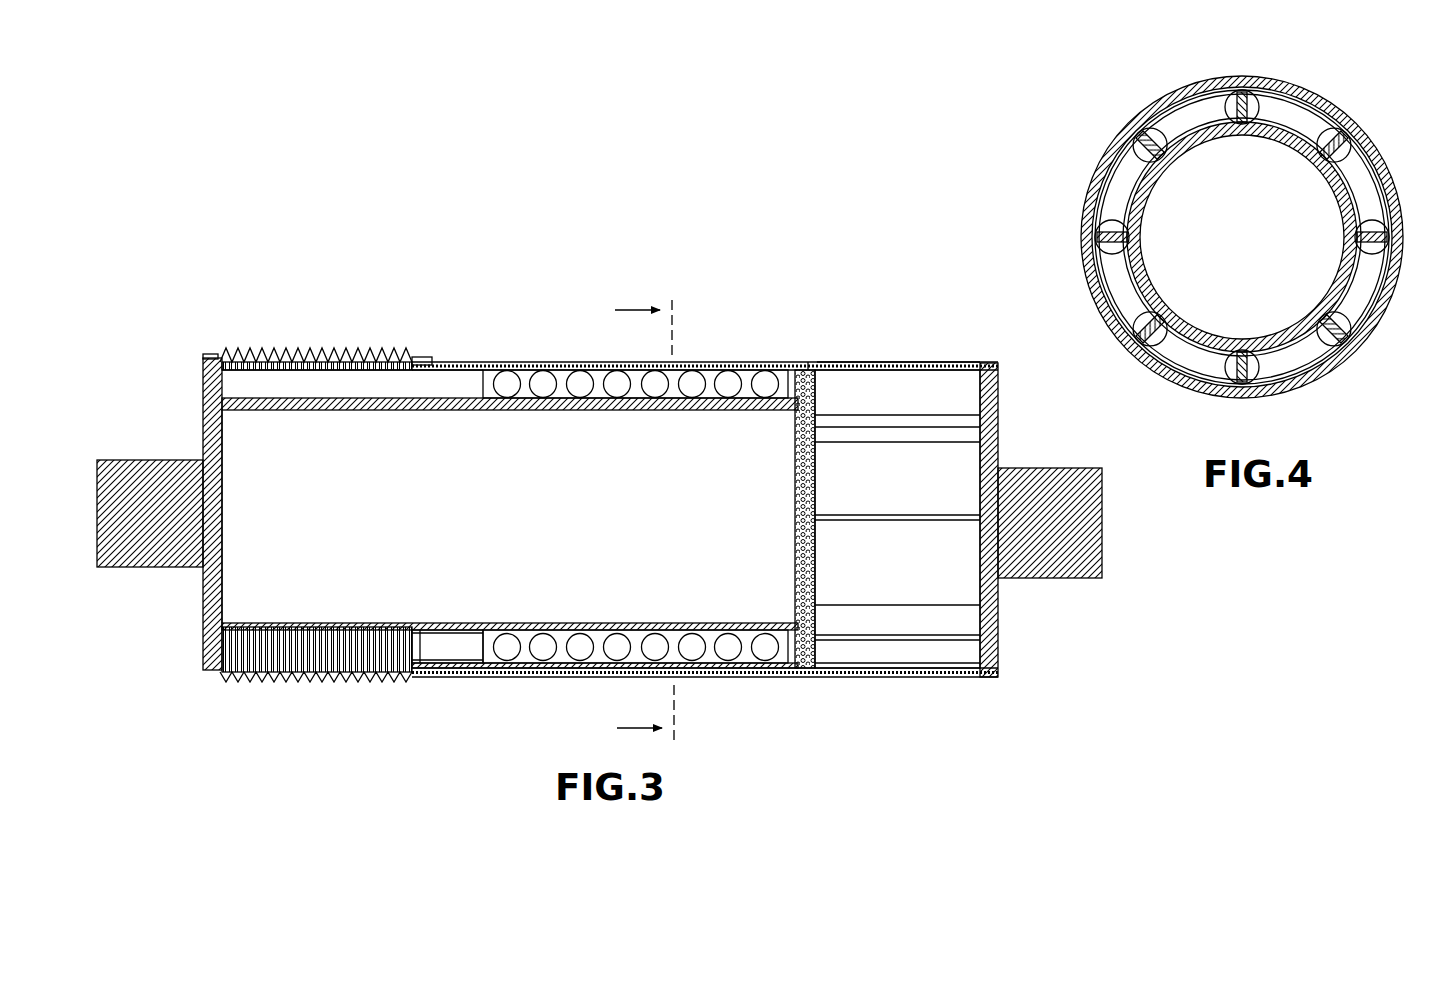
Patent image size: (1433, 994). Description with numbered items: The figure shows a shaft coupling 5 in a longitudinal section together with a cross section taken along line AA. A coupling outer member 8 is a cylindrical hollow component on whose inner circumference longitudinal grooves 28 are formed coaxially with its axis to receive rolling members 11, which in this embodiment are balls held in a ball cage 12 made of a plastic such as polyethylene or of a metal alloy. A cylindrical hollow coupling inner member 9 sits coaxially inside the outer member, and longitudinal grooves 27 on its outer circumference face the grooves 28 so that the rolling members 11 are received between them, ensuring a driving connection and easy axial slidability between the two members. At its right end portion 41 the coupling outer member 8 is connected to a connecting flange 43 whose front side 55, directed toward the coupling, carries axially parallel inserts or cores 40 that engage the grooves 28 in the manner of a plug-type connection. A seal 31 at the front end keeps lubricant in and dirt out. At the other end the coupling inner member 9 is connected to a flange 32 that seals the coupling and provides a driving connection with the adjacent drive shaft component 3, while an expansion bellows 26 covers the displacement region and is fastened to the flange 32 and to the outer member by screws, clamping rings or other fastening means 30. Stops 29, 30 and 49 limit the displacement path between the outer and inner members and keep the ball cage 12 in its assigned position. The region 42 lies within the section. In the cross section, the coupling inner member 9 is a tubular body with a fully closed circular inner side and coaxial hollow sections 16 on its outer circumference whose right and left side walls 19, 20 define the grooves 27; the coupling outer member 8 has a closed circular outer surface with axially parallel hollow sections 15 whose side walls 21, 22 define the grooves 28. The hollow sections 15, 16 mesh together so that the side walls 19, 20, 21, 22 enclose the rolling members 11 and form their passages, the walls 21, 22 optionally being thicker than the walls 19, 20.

In FIG. 3, the drive shaft component 3 is at (166, 567).
In FIG. 3, the shaft coupling 5 is at (627, 212).
In FIG. 3, the coupling outer member 8 is at (803, 678).
In FIG. 4, the coupling outer member 8 is at (1095, 172).
In FIG. 3, the coupling inner member 9 is at (397, 410).
In FIG. 3, the rolling members 11 is at (508, 652).
In FIG. 4, the rolling members 11 is at (1345, 325).
In FIG. 3, the ball cage 12 is at (510, 372).
In FIG. 4, the ball cage 12 is at (1140, 127).
In FIG. 4, the hollow sections of the coupling outer member 15 is at (1193, 352).
In FIG. 4, the hollow sections of the coupling inner member 16 is at (1288, 373).
In FIG. 4, the side wall 19 is at (1114, 326).
In FIG. 4, the side wall 20 is at (1090, 280).
In FIG. 4, the side wall 21 is at (1262, 86).
In FIG. 4, the side wall 22 is at (1314, 122).
In FIG. 3, the expansion bellows 26 is at (285, 684).
In FIG. 3, the longitudinal grooves of the coupling inner member 27 is at (285, 360).
In FIG. 3, the longitudinal grooves of the coupling outer member 28 is at (453, 646).
In FIG. 3, the stop 29 is at (208, 354).
In FIG. 3, the fastening means / stop 30 is at (422, 357).
In FIG. 3, the seal 31 is at (808, 362).
In FIG. 3, the flange 32 is at (204, 645).
In FIG. 3, the inserts or cores 40 is at (950, 391).
In FIG. 3, the right end portion 41 is at (952, 342).
In FIG. 3, the cavity 42 is at (262, 593).
In FIG. 3, the connecting flange 43 is at (998, 626).
In FIG. 3, the stop 49 is at (795, 470).
In FIG. 3, the front side 55 is at (980, 617).